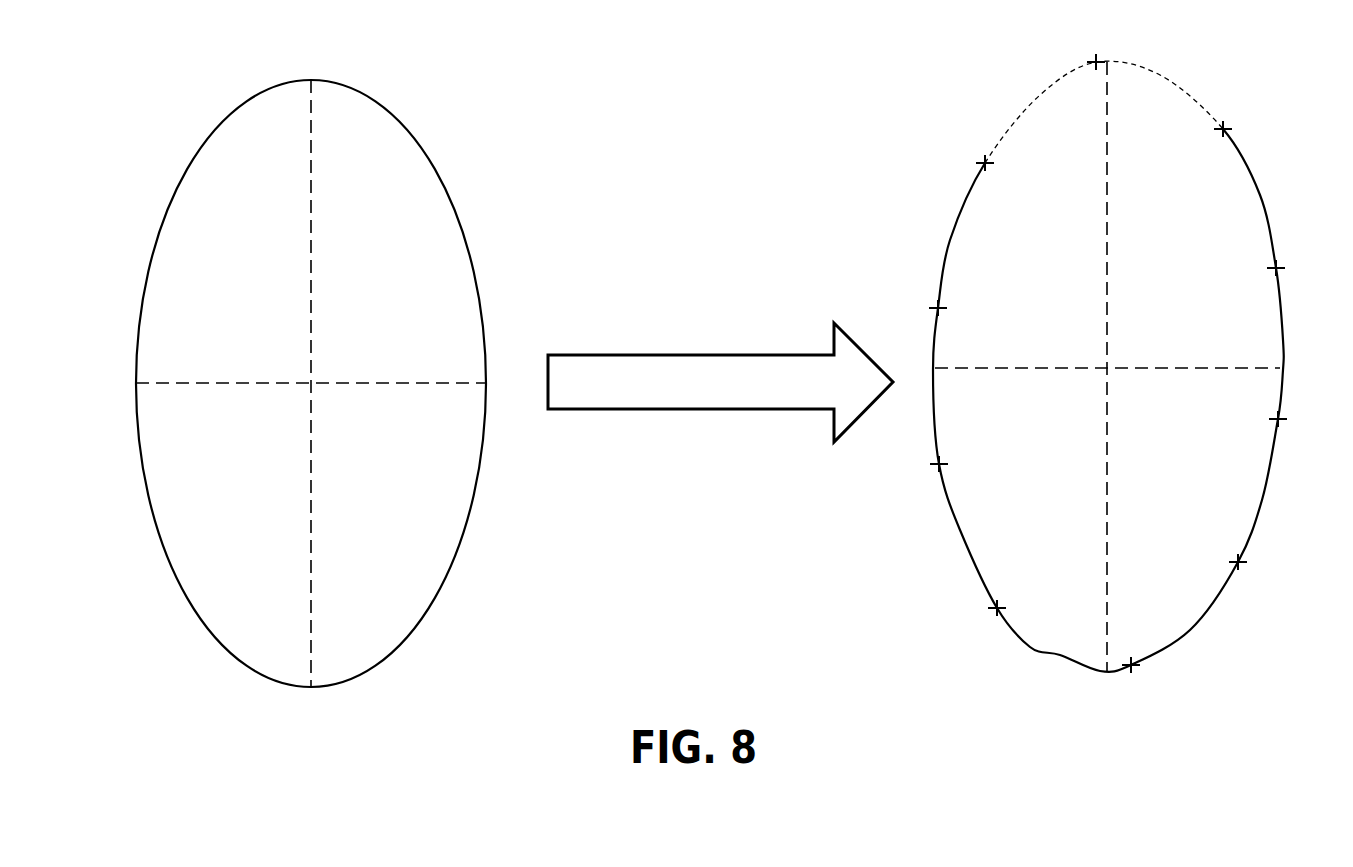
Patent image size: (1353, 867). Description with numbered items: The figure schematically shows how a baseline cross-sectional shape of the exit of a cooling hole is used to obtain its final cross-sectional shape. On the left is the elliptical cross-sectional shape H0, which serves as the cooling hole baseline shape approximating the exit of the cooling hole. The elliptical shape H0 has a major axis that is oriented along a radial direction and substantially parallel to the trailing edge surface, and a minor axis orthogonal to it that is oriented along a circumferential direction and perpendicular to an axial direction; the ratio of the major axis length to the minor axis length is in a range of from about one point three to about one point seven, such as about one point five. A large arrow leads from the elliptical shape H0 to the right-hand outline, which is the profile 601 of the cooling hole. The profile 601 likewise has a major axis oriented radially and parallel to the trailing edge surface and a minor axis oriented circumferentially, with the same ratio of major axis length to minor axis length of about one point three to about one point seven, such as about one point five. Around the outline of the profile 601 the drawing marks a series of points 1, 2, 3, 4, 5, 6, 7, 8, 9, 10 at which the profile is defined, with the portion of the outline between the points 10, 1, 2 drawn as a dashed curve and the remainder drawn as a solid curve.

The elliptical cross-sectional shape H0 is at (395, 115).
The profile 601 is at (1030, 646).
The control point 1 is at (1101, 47).
The control point 2 is at (1232, 118).
The control point 3 is at (1283, 257).
The control point 4 is at (1286, 408).
The control point 5 is at (1230, 550).
The control point 6 is at (1136, 650).
The control point 7 is at (1005, 596).
The control point 8 is at (949, 452).
The control point 9 is at (949, 296).
The control point 10 is at (1000, 176).